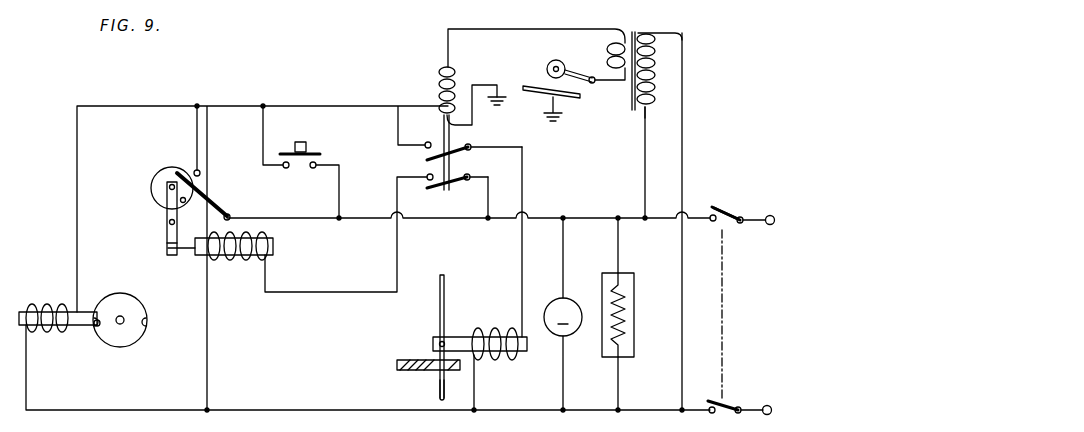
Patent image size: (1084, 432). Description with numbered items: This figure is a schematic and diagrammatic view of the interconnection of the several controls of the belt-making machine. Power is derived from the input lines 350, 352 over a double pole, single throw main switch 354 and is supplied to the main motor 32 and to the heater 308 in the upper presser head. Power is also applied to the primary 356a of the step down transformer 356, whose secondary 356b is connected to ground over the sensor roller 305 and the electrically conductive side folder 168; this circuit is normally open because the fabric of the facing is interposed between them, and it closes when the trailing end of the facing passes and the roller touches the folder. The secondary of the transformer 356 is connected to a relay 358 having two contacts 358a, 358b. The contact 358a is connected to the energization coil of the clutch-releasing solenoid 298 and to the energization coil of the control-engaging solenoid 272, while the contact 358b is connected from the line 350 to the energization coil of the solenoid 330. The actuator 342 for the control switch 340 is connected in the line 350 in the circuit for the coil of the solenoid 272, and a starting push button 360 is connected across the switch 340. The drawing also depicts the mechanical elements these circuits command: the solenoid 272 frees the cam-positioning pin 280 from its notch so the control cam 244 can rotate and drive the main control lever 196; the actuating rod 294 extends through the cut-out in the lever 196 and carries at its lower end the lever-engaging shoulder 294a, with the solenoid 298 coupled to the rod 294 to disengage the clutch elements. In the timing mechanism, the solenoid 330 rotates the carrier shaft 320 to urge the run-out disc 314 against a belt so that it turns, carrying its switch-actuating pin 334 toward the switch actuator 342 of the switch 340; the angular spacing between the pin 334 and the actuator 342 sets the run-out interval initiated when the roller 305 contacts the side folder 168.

The main motor 32 is at (563, 317).
The side folder 168 is at (530, 85).
The main control lever 196 is at (397, 365).
The control cam 244 is at (123, 295).
The control-engaging solenoid 272 is at (47, 303).
The cam-positioning pin 280 is at (100, 328).
The actuating rod 294 is at (445, 295).
The lever-engaging shoulder 294a is at (437, 388).
The clutch-releasing solenoid 298 is at (497, 327).
The sensor roller 305 is at (560, 62).
The heater 308 is at (623, 322).
The run-out disc 314 is at (160, 177).
The carrier shaft 320 is at (169, 223).
The solenoid 330 is at (238, 262).
The switch-actuating pin 334 is at (184, 203).
The control switch 340 is at (213, 187).
The switch actuator 342 is at (217, 204).
The input line 350 is at (771, 215).
The input line 352 is at (767, 405).
The main switch 354 is at (730, 222).
The step down transformer 356 is at (642, 28).
The primary 356a is at (653, 47).
The secondary 356b is at (620, 72).
The relay 358 is at (443, 58).
The relay contact 358a is at (430, 190).
The relay contact 358b is at (440, 147).
The starting push button 360 is at (310, 146).